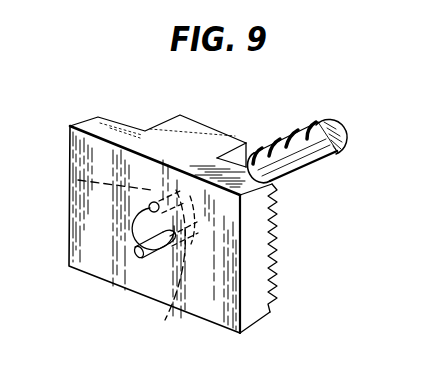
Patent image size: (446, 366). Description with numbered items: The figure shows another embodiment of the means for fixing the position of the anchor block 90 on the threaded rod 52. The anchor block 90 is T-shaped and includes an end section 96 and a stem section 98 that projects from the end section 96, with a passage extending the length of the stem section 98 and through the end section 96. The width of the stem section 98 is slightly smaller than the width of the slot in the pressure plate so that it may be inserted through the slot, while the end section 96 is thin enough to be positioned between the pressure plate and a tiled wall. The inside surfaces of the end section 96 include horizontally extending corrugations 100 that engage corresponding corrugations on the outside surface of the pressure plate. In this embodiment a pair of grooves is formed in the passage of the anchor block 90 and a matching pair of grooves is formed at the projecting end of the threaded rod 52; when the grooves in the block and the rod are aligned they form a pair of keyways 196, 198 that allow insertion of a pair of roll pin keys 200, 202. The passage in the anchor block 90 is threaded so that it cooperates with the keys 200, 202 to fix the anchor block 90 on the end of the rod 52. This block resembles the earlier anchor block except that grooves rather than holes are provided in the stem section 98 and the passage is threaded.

The anchor block 90 is at (138, 114).
The end section 96 is at (100, 118).
The stem section 98 is at (207, 133).
The threaded rod 52 is at (300, 112).
The corrugations 100 is at (275, 280).
The keyway 196 is at (78, 180).
The keyway 198 is at (163, 265).
The roll pin key 200 is at (148, 206).
The roll pin key 202 is at (135, 258).